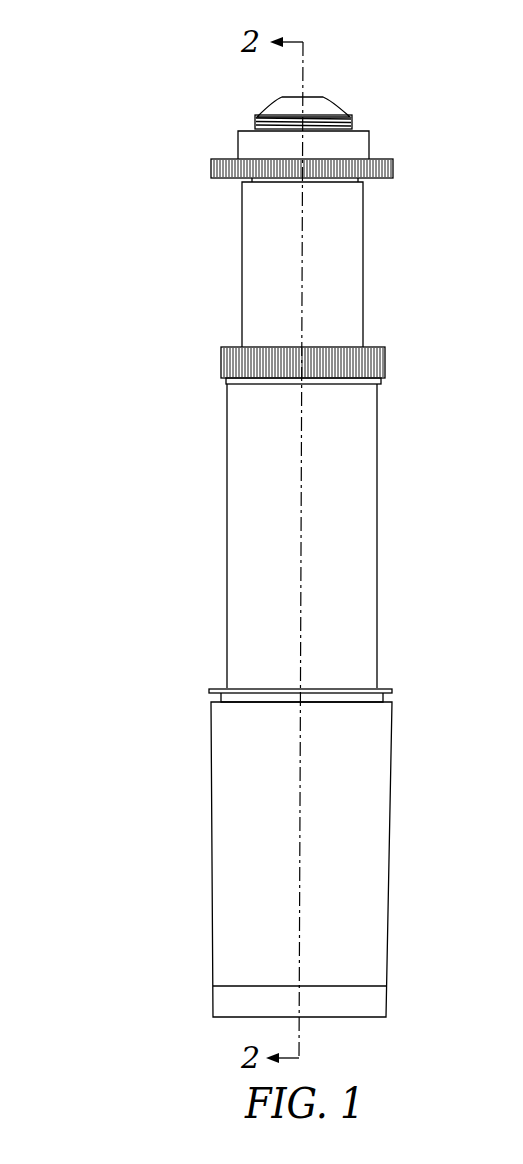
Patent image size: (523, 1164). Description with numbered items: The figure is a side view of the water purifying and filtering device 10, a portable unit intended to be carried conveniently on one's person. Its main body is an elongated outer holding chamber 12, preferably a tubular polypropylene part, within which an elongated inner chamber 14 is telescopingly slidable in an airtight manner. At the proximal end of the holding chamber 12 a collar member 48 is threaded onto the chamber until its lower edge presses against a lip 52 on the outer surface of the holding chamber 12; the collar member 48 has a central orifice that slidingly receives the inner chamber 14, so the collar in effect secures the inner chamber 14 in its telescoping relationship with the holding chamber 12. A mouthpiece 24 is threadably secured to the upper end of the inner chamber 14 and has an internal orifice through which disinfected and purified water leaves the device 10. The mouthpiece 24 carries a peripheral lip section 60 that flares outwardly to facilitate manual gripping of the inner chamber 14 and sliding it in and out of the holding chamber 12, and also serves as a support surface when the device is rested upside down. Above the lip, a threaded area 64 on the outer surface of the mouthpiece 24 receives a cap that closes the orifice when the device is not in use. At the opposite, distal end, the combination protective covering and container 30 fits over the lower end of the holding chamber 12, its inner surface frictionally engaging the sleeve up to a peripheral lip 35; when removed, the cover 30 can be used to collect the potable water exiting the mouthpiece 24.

The water purifying and filtering device 10 is at (65, 92).
The outer holding chamber 12 is at (334, 536).
The inner chamber 14 is at (334, 264).
The mouthpiece 24 is at (324, 95).
The combination protective covering and container 30 is at (273, 859).
The peripheral lip 35 is at (335, 685).
The collar member 48 is at (341, 357).
The lip 52 is at (259, 373).
The peripheral lip section 60 is at (334, 165).
The threaded area 64 is at (267, 111).